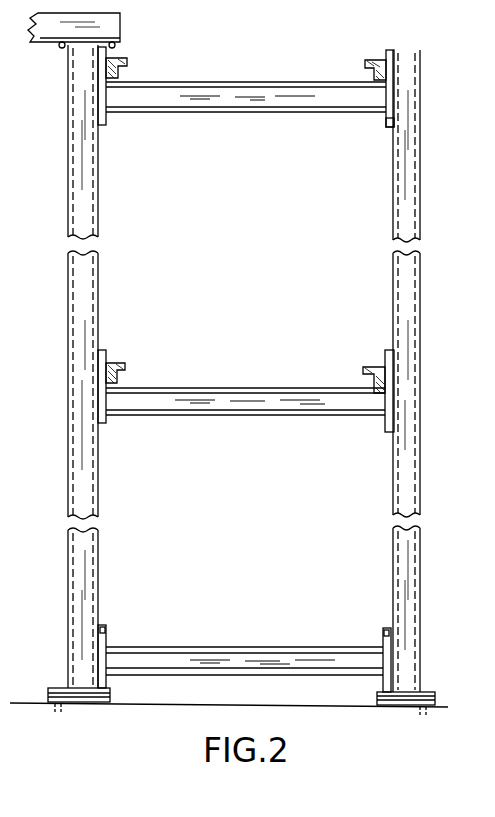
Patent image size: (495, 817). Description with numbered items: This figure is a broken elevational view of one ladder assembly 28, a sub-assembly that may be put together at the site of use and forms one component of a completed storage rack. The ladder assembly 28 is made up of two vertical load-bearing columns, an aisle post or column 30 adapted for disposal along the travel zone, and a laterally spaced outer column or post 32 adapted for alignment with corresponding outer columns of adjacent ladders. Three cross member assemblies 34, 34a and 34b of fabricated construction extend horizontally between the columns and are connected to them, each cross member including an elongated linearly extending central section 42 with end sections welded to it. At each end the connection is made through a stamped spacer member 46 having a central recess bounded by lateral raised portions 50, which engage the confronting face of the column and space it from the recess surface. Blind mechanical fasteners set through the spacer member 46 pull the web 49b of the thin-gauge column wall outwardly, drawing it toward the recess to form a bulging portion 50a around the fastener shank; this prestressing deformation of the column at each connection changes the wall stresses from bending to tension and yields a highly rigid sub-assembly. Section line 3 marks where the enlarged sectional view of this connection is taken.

The ladder assembly 28 is at (395, 50).
The aisle post or column 30 is at (80, 280).
The outer column or post 32 is at (410, 300).
The cross member assembly 34 is at (207, 82).
The cross member assembly 34a is at (208, 388).
The cross member assembly 34b is at (160, 647).
The central section 42 is at (258, 98).
The spacer member 46 is at (107, 97).
The web of the column wall 49b is at (108, 395).
The raised portions 50 is at (386, 119).
The bulging portion of the column wall 50a is at (112, 60).
The section line 3- 3 is at (53, 366).